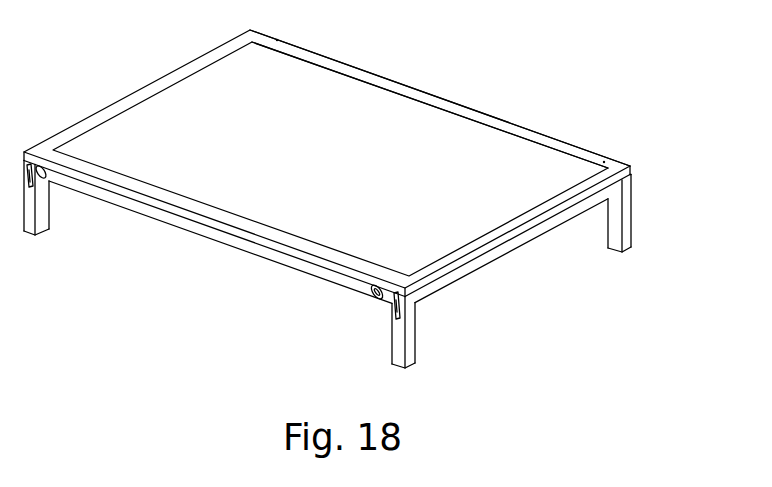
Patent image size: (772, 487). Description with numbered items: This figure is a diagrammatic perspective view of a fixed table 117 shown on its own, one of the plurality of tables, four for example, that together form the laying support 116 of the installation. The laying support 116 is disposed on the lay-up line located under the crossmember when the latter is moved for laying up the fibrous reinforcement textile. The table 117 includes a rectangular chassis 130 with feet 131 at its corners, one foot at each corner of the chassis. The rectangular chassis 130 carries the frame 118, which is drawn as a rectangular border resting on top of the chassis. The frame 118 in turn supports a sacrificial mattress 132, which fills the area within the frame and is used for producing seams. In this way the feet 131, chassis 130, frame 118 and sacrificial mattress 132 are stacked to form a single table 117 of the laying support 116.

The sacrificial mattress 132 is at (372, 97).
The frame 118 is at (463, 115).
The fixed table 117 is at (308, 277).
The laying support 116 is at (527, 245).
The rectangular chassis 130 is at (428, 290).
The feet 131 is at (632, 217).